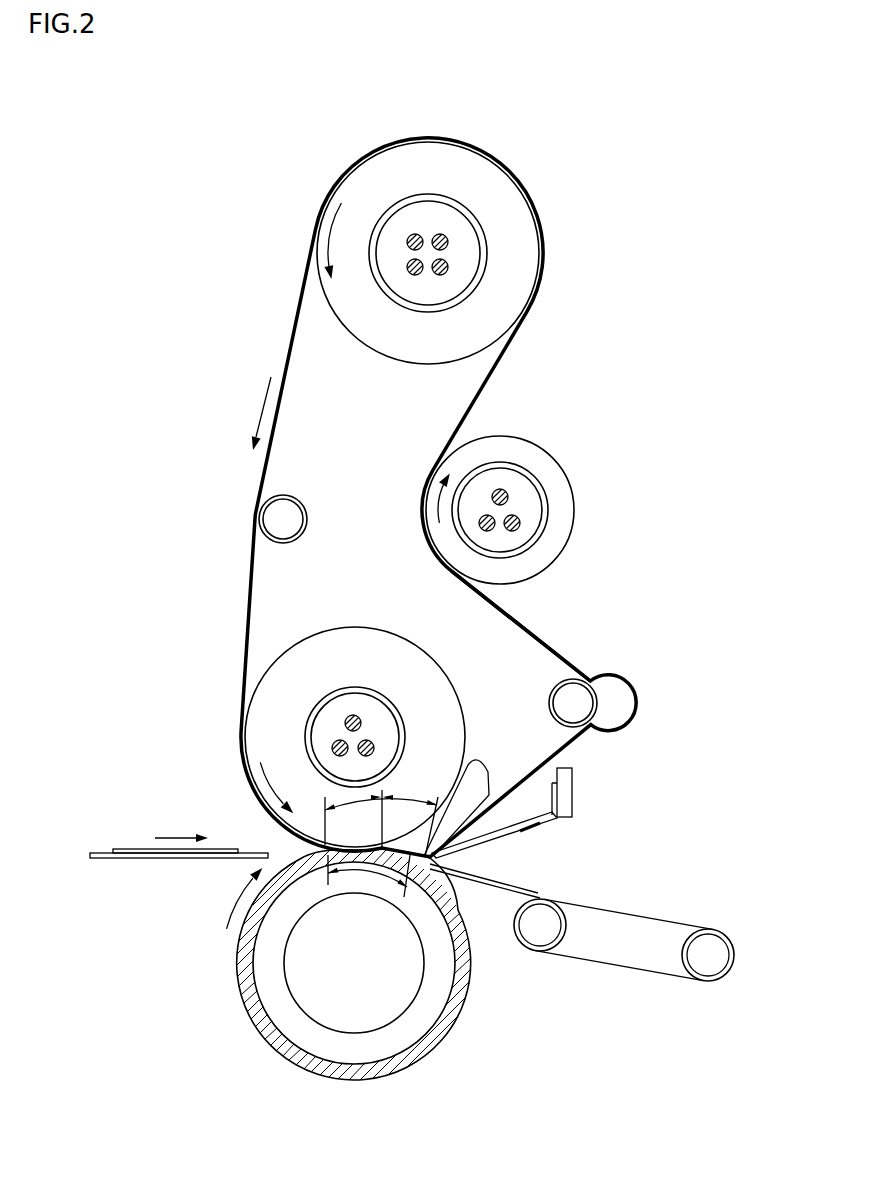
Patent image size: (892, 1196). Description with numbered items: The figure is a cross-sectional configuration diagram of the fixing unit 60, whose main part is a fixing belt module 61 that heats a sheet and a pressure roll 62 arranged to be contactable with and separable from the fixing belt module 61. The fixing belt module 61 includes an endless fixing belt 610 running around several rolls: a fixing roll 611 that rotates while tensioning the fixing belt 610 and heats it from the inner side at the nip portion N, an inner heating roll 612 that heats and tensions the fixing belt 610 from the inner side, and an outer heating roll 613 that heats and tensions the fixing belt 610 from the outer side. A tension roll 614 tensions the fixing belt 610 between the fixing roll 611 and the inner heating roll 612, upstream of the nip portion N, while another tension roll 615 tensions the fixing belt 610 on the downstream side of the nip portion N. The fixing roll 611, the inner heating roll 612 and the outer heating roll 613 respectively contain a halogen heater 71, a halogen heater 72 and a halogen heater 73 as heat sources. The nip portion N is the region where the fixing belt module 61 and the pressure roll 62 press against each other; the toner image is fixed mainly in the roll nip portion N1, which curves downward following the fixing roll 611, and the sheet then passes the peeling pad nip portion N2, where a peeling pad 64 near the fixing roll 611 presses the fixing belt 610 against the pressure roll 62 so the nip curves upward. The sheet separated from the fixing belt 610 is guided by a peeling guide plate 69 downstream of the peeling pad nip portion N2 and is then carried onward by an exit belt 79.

The fixing unit 60 is at (578, 122).
The fixing belt module 61 is at (282, 306).
The fixing belt 610 is at (548, 648).
The fixing roll 611 is at (365, 627).
The inner heating roll 612 is at (374, 360).
The outer heating roll 613 is at (512, 432).
The tension roll 614 is at (302, 501).
The tension roll 615 is at (556, 688).
The pressure roll 62 is at (294, 1063).
The peeling pad 64 is at (481, 758).
The peeling guide plate 69 is at (503, 838).
The halogen heater 71 is at (355, 716).
The halogen heater 72 is at (442, 236).
The halogen heater 73 is at (516, 517).
The exit belt 79 is at (620, 966).
The nip portion N is at (369, 878).
The roll nip portion N1 is at (381, 819).
The peeling pad nip portion N2 is at (410, 826).